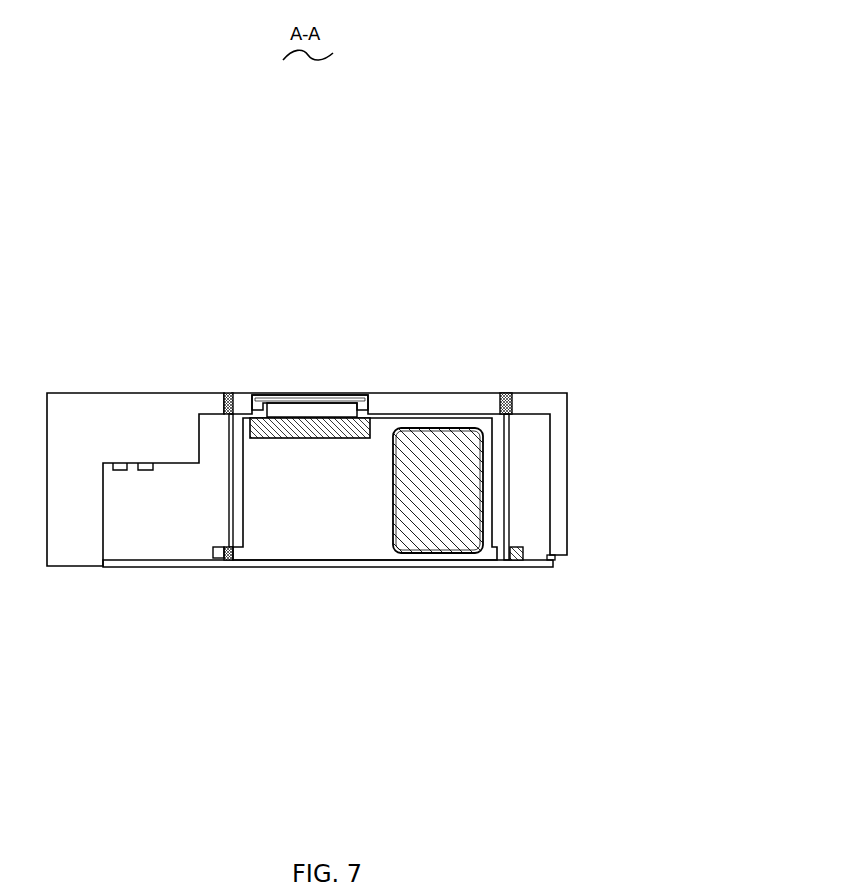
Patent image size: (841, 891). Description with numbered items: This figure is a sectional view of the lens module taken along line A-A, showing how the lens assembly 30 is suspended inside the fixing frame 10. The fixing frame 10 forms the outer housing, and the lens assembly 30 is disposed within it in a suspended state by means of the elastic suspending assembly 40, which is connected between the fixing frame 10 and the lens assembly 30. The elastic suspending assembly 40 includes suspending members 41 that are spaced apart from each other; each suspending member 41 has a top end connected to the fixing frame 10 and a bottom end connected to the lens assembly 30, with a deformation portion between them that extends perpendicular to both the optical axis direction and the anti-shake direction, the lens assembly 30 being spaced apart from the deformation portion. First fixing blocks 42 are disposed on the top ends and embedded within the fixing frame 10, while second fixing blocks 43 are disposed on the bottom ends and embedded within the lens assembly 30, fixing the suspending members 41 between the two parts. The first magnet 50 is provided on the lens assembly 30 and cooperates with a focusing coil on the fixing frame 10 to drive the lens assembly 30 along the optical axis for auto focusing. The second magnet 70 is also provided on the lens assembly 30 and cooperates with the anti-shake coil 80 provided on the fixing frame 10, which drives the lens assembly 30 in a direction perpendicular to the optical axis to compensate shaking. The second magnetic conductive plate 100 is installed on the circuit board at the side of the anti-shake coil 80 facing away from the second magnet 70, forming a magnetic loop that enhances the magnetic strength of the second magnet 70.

The fixing frame 10 is at (73, 553).
The lens assembly 30 is at (297, 552).
The elastic suspending assembly 40 is at (658, 400).
The suspending member 41 is at (509, 478).
The first fixing block 42 is at (513, 403).
The second fixing block 43 is at (513, 557).
The first magnet 50 is at (435, 545).
The second magnet 70 is at (362, 425).
The anti-shake coil 80 is at (312, 404).
The second magnetic conductive plate 100 is at (262, 396).